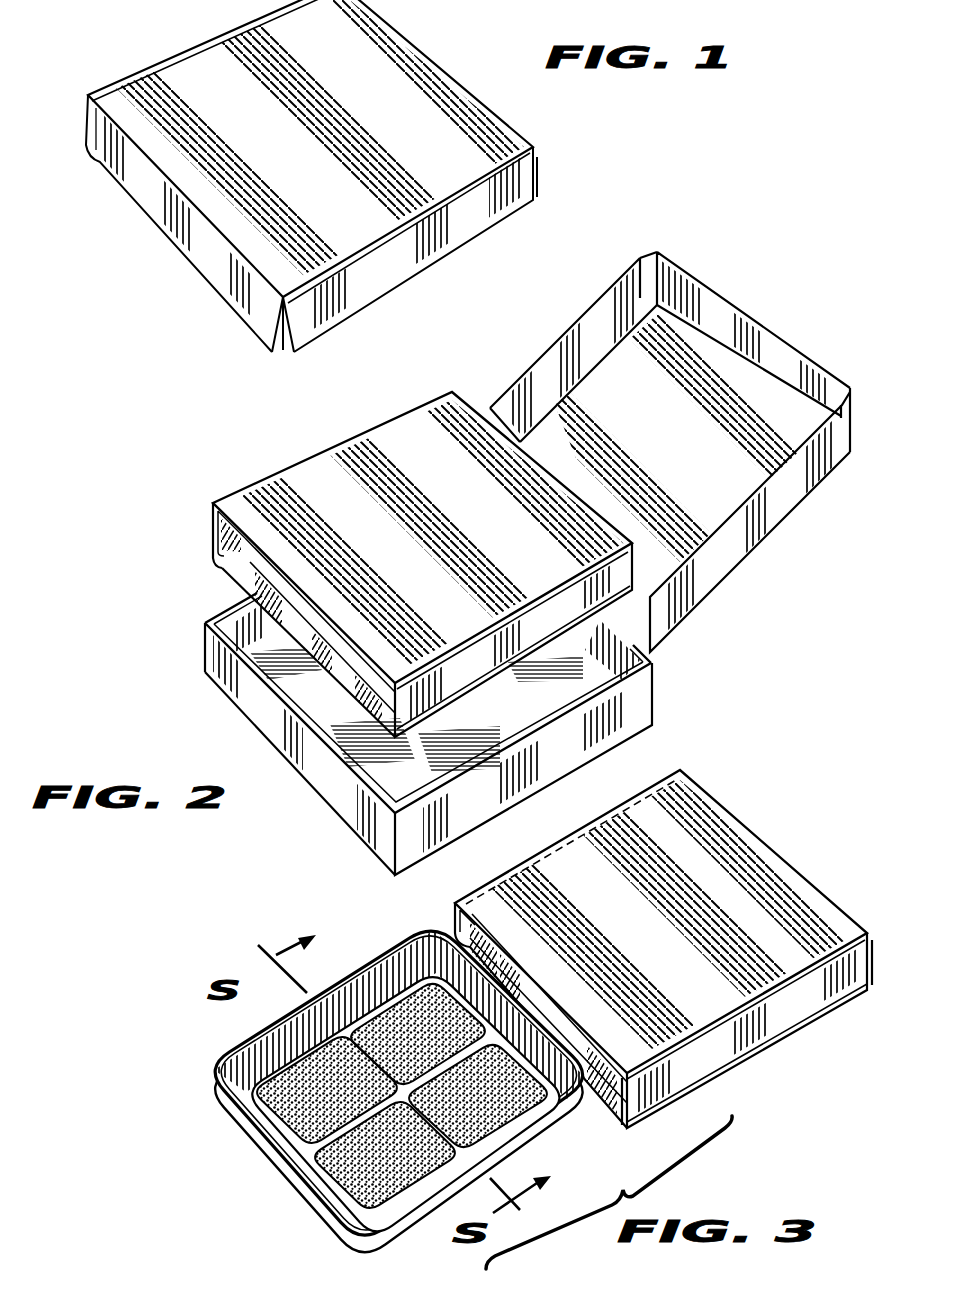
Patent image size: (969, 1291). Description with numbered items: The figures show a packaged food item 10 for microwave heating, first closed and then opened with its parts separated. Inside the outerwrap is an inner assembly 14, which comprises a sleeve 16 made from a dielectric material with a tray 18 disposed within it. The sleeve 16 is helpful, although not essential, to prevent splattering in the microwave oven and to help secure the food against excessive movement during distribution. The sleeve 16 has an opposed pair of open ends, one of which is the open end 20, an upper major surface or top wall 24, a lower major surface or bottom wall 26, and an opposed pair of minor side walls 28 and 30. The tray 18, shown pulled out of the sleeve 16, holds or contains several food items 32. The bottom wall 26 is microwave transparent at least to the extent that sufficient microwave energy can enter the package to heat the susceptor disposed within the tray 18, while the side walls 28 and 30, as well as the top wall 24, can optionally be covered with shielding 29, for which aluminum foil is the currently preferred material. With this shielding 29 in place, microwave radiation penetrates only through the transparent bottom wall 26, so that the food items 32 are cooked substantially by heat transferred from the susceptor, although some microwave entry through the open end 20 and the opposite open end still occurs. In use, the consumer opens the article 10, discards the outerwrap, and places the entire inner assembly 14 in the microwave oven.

In FIG. 1, the packaged food item 10 is at (134, 52).
In FIG. 2, the packaged food item 10 is at (765, 328).
In FIG. 2, the inner assembly 14 is at (484, 645).
In FIG. 3, the inner assembly 14 is at (484, 645).
In FIG. 2, the sleeve 16 is at (327, 467).
In FIG. 3, the sleeve 16 is at (707, 807).
In FIG. 2, the tray 18 is at (405, 645).
In FIG. 3, the tray 18 is at (416, 1091).
In FIG. 2, the open end 20 is at (473, 403).
In FIG. 2, the top wall 24 is at (492, 515).
In FIG. 3, the top wall 24 is at (638, 930).
In FIG. 2, the bottom wall 26 is at (337, 757).
In FIG. 3, the bottom wall 26 is at (603, 1100).
In FIG. 2, the side wall 28 is at (233, 567).
In FIG. 2, the shielding 29 is at (217, 522).
In FIG. 3, the shielding 29 is at (460, 933).
In FIG. 2, the side wall 30 is at (465, 677).
In FIG. 3, the food items 32 is at (345, 1138).